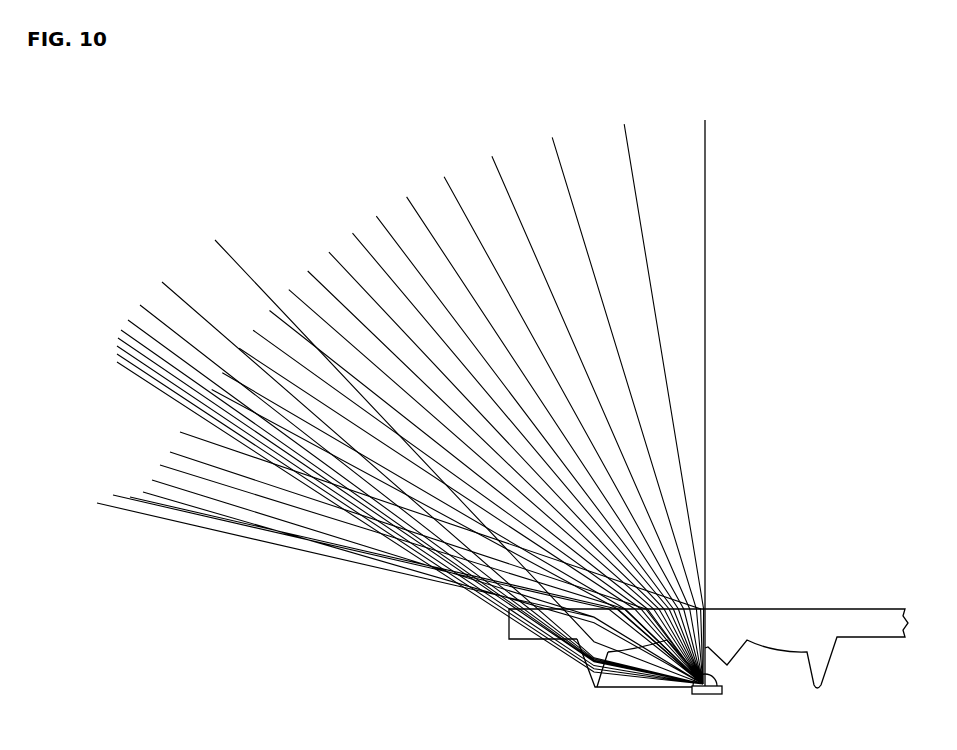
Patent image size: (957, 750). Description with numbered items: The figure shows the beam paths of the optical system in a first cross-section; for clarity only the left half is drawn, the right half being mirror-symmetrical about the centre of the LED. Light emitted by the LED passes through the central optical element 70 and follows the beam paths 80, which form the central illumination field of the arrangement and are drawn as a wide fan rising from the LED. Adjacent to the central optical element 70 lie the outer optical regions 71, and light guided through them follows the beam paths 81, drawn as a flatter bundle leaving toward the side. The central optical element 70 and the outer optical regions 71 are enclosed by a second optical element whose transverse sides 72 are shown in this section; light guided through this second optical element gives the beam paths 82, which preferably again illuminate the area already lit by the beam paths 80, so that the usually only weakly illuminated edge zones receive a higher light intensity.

The central optical element 70 is at (718, 629).
The outer optical regions 71 is at (652, 632).
The transverse sides 72 is at (590, 666).
The beam paths 80 is at (183, 427).
The beam paths 81 is at (177, 428).
The beam paths 82 is at (204, 233).